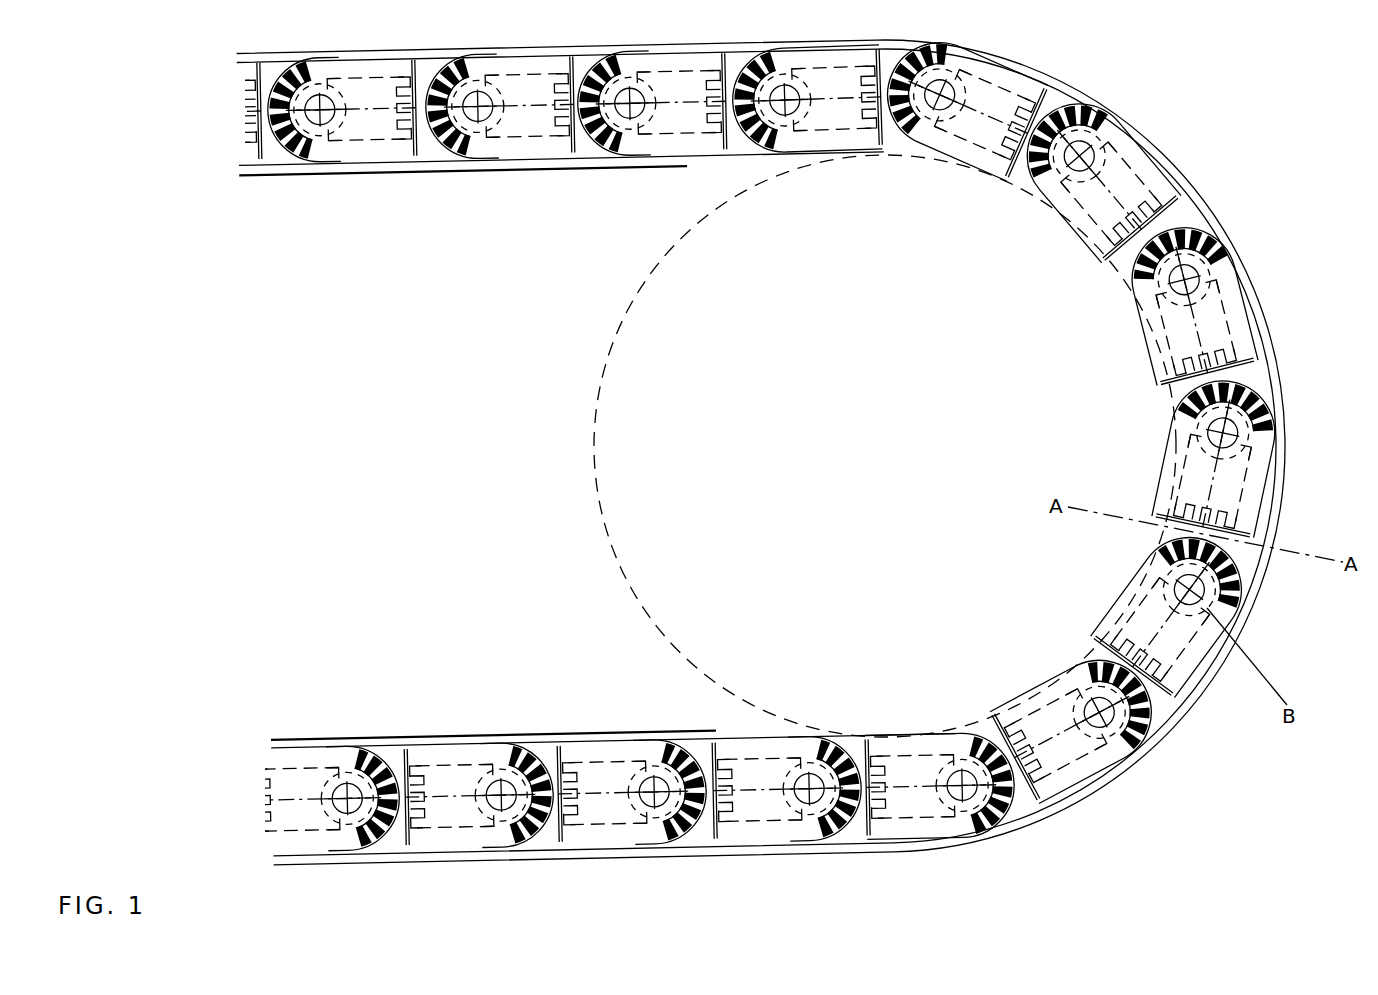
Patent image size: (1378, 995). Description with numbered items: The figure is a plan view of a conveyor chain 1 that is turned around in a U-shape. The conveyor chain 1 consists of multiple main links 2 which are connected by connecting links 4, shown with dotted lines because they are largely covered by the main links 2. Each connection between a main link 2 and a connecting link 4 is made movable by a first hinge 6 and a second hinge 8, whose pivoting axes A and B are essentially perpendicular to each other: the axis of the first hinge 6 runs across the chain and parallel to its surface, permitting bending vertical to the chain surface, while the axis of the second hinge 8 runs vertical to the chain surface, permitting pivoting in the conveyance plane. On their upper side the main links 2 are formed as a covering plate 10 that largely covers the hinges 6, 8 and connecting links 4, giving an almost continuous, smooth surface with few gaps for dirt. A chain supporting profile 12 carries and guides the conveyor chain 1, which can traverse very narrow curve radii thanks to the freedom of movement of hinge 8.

The conveyor chain 1 is at (1255, 315).
The main link 2 is at (1248, 493).
The connecting link 4 is at (1200, 562).
The first hinge 6 is at (1173, 525).
The second hinge 8 is at (1203, 597).
The covering plate 10 is at (1140, 165).
The chain supporting profile 12 is at (545, 168).